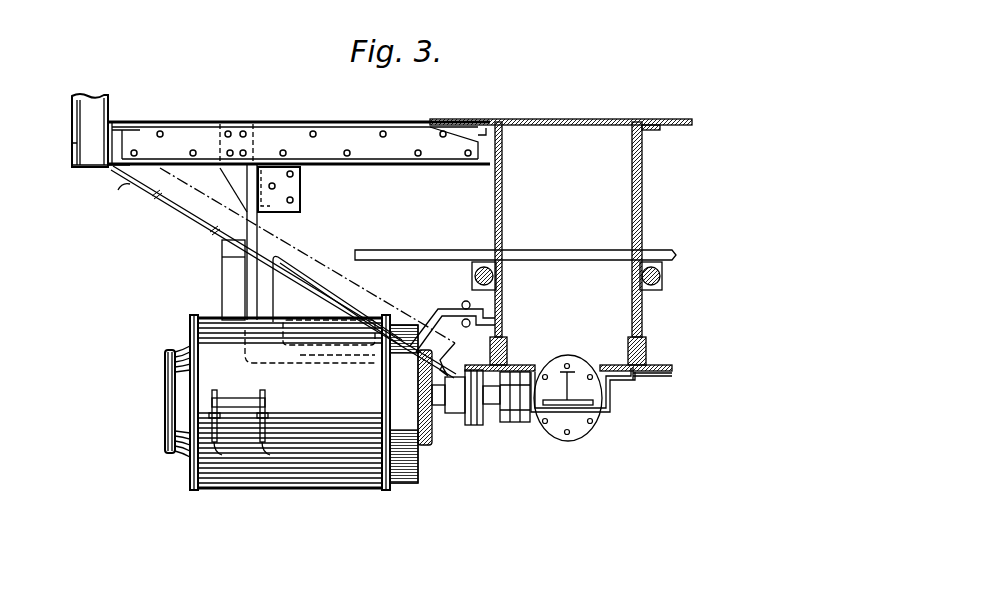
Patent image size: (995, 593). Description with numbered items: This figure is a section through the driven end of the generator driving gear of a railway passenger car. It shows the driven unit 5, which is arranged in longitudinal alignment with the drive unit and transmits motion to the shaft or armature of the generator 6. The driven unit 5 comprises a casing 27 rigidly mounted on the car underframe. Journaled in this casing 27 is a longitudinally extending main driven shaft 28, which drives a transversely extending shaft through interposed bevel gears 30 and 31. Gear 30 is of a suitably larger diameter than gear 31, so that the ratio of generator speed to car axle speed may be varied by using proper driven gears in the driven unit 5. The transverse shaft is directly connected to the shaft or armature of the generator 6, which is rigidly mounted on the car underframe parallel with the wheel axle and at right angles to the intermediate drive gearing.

The generator 6 is at (300, 463).
The bevel gear 31 is at (455, 420).
The bevel gear 30 is at (497, 422).
The casing 27 is at (600, 414).
The driven unit 5 is at (612, 397).
The main driven shaft 28 is at (637, 381).